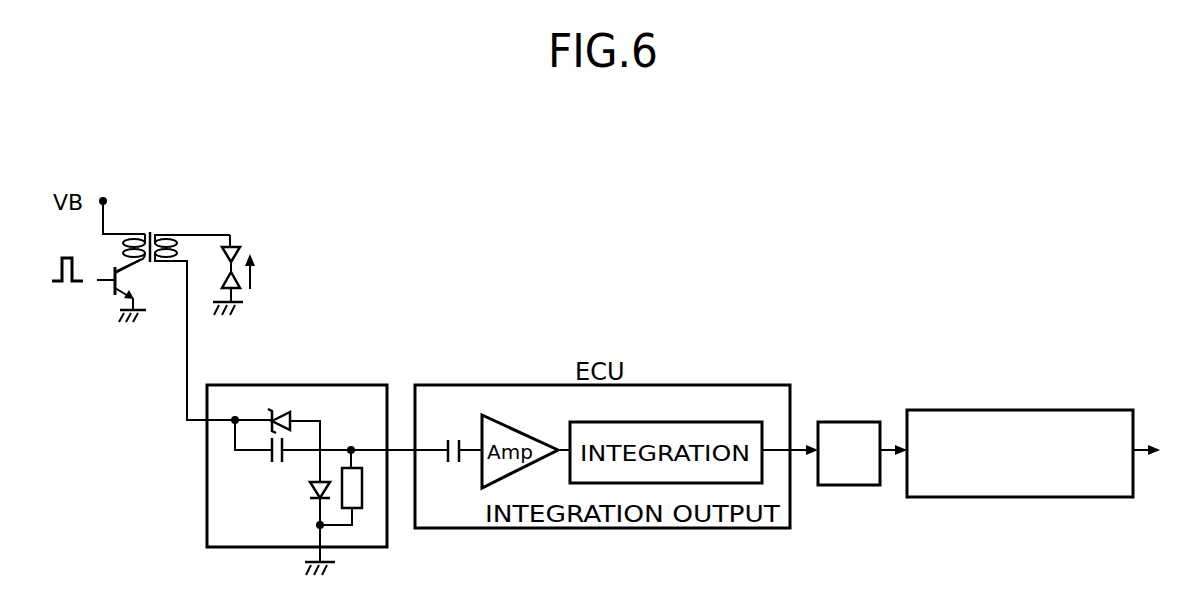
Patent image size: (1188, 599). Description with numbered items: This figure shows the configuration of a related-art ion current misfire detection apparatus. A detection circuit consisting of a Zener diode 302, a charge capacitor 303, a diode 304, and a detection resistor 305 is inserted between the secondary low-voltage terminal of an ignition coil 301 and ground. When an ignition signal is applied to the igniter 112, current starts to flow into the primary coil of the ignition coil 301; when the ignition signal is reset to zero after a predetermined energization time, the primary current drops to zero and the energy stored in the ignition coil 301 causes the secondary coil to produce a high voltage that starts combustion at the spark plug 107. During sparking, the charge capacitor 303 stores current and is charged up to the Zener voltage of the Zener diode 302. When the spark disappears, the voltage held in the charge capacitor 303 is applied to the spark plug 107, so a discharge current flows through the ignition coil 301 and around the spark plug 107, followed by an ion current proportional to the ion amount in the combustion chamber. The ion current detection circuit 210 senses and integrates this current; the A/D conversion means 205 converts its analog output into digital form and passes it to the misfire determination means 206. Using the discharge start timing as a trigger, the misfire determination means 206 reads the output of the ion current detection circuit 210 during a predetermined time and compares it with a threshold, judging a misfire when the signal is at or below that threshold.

The ignition coil 301 is at (158, 224).
The spark plug 107 is at (251, 243).
The igniter 112 is at (111, 293).
The ion current detection circuit 210 is at (278, 377).
The Zener diode 302 is at (286, 404).
The charge capacitor 303 is at (268, 462).
The diode 304 is at (308, 494).
The detection resistor 305 is at (357, 509).
The A/D conversion means 205 is at (851, 420).
The misfire determination means 206 is at (950, 408).